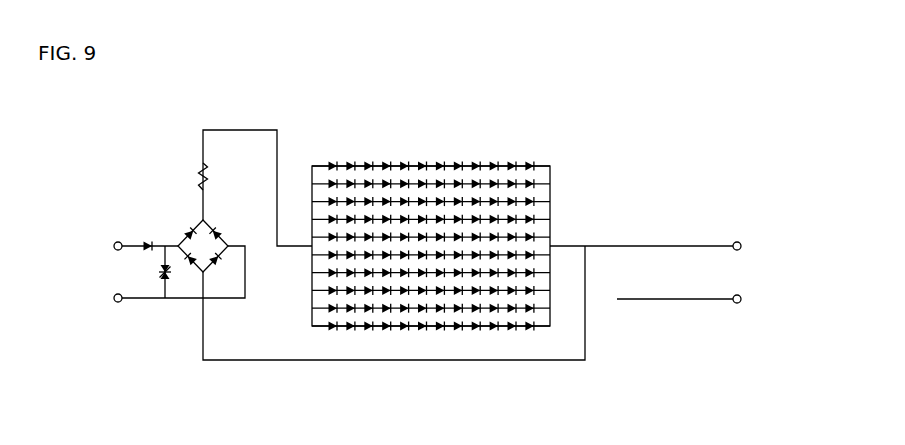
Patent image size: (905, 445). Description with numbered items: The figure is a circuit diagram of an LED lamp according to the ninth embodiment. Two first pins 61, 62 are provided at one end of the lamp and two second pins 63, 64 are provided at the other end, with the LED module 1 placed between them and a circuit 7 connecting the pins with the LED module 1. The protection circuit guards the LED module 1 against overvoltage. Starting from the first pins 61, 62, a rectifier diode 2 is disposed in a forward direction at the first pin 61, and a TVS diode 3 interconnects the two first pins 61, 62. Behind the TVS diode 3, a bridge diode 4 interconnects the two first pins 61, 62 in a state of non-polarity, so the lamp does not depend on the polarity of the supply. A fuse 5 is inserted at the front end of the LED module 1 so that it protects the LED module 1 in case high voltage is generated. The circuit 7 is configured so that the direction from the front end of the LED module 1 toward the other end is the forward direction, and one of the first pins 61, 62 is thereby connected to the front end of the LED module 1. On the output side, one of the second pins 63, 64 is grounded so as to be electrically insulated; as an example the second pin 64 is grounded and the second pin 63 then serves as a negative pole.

The LED module 1 is at (427, 147).
The rectifier diode 2 is at (139, 234).
The transient voltage suppression (TVS) diode 3 is at (157, 294).
The bridge diode 4 is at (179, 222).
The fuse 5 is at (196, 172).
The circuit 7 is at (221, 367).
The first pin 61 is at (110, 241).
The first pin 62 is at (110, 303).
The second pin 63 is at (746, 238).
The second pin 64 is at (746, 306).